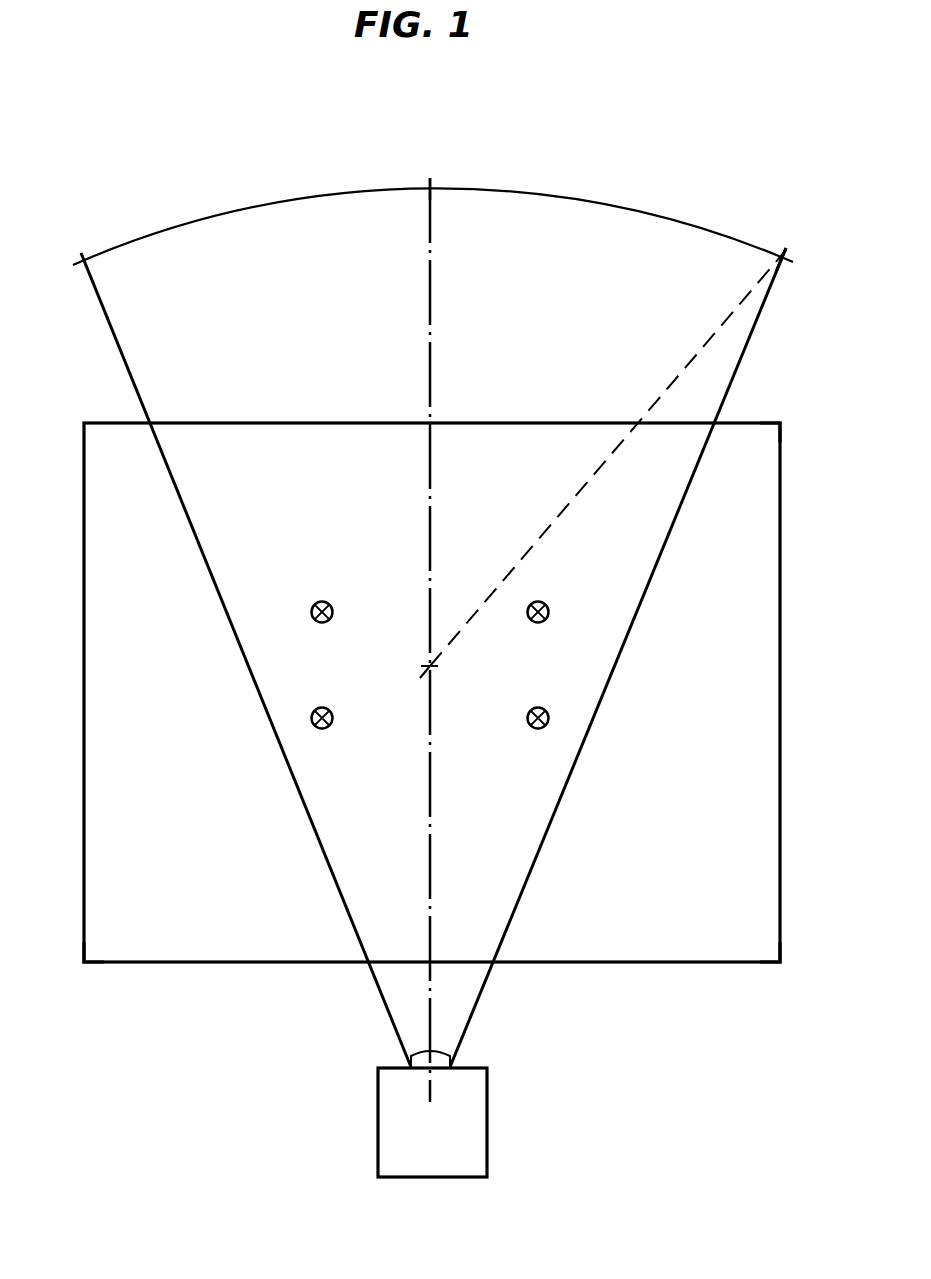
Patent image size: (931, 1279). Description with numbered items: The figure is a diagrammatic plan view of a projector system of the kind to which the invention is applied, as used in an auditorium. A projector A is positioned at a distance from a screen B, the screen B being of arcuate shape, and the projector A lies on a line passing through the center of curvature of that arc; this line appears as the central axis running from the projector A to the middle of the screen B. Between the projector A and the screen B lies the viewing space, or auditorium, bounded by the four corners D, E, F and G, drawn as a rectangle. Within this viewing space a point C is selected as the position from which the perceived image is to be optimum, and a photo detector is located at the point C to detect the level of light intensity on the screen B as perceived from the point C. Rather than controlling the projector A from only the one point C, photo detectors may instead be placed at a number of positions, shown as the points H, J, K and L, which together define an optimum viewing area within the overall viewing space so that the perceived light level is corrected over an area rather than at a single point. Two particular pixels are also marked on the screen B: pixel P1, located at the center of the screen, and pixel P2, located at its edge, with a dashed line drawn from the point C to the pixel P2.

The projector A is at (477, 1098).
The screen B is at (537, 193).
The point C is at (441, 667).
The corner D of viewing space D is at (425, 677).
The corner E of viewing space E is at (774, 418).
The corner F of viewing space F is at (88, 972).
The corner G of viewing space G is at (779, 972).
The point H is at (322, 596).
The point J is at (538, 596).
The point K is at (323, 736).
The point L is at (539, 736).
The pixel P1 is at (449, 178).
The pixel P2 is at (614, 440).